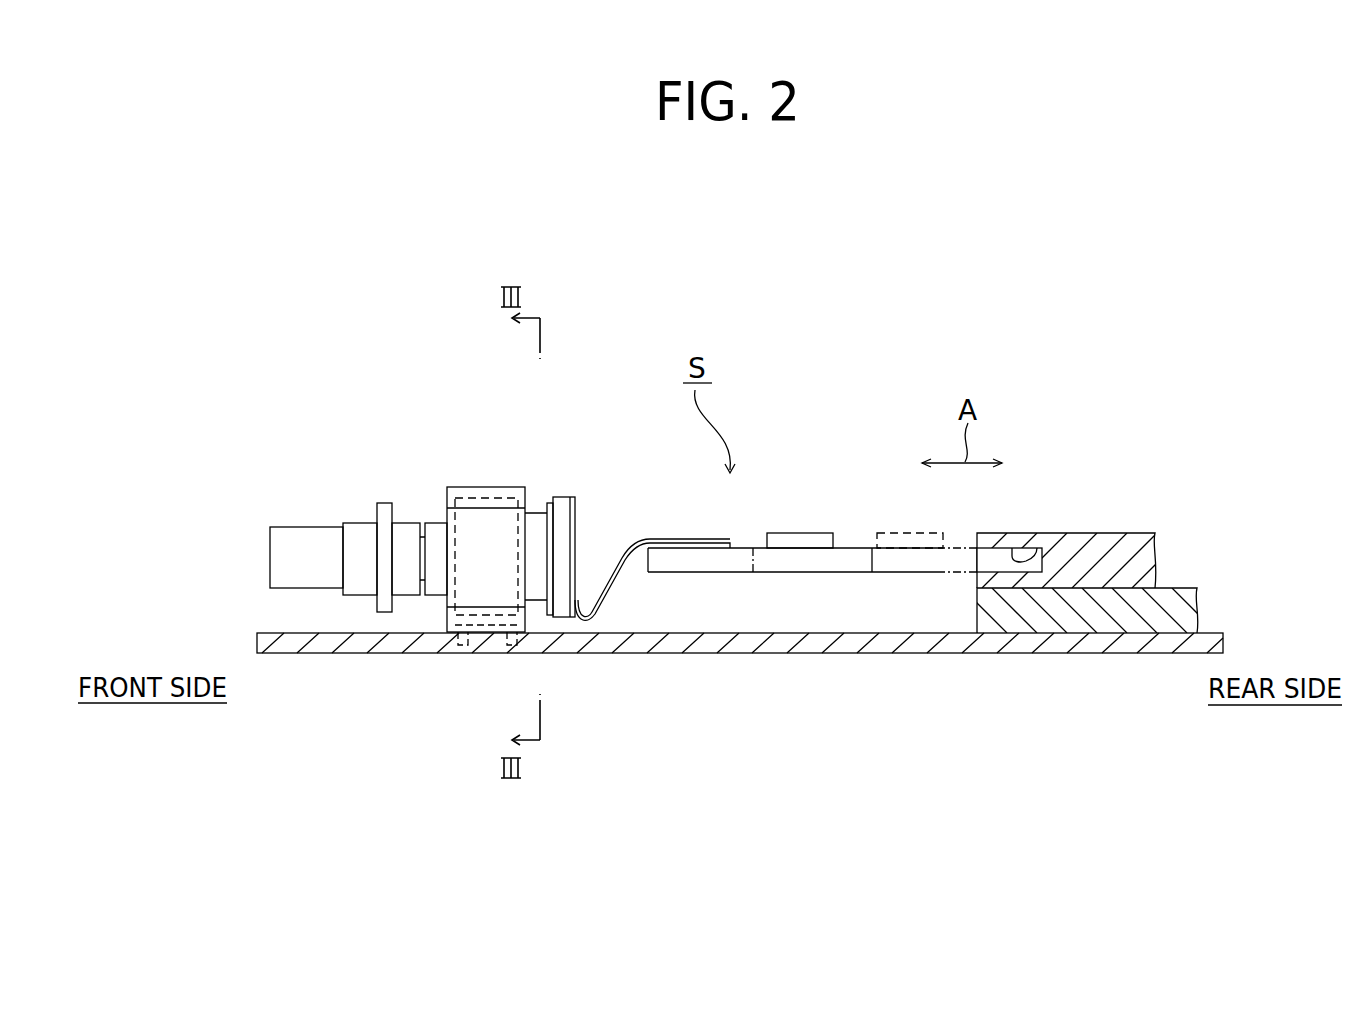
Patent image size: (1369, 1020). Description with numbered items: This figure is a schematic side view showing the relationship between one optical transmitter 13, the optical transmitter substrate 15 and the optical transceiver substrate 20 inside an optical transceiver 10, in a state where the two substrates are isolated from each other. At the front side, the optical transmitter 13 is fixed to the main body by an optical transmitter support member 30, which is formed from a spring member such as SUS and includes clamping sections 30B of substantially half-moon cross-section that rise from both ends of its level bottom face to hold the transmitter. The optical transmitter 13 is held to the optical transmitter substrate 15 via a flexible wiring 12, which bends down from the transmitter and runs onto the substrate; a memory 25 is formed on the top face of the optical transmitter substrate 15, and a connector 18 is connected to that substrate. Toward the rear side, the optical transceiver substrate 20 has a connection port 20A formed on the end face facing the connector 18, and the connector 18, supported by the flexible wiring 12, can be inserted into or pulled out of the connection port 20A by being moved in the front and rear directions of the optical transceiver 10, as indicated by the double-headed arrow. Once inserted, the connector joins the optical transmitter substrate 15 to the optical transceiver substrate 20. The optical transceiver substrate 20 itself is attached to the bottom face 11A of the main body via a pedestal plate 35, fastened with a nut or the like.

The optical transceiver 10 is at (1160, 393).
The bottom face 11A is at (962, 652).
The flexible wiring 12 is at (627, 547).
The optical transmitter 13 is at (350, 523).
The optical transmitter substrate 15 is at (720, 572).
The connector 18 is at (890, 538).
The optical transceiver substrate 20 is at (1140, 543).
The connection port 20A is at (1045, 548).
The memory 25 is at (795, 533).
The optical transmitter support member 30 is at (488, 487).
The clamping sections 30B is at (477, 545).
The pedestal plate 35 is at (1122, 623).